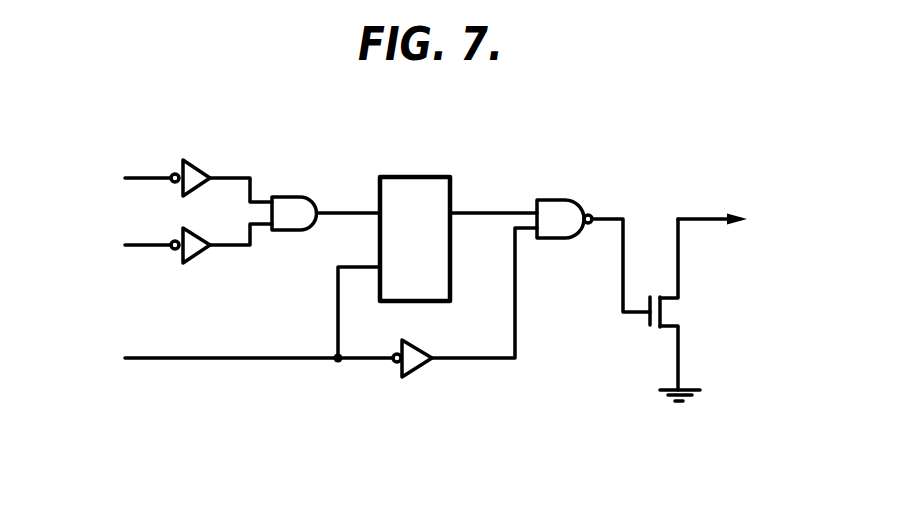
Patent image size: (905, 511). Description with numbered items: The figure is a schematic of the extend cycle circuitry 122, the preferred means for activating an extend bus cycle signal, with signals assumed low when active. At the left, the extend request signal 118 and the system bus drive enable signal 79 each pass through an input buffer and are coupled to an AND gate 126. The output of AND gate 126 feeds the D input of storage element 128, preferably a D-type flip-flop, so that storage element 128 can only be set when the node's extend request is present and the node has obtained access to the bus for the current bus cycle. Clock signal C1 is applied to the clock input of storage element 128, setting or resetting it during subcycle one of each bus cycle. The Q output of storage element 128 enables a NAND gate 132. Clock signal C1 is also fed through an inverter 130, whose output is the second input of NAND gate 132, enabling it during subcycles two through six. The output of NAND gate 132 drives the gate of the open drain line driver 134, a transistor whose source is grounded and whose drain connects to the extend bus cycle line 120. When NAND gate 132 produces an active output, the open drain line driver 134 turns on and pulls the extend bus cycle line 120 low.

The extend request signal 118 is at (150, 178).
The system bus drive enable signal 79 is at (147, 245).
The AND gate 126 is at (288, 208).
The storage element 128 is at (412, 185).
The inverter 130 is at (415, 362).
The NAND gate 132 is at (565, 212).
The open drain line driver 134 is at (627, 338).
The extend bus cycle line 120 is at (708, 215).
The extend cycle circuitry 122 is at (445, 307).